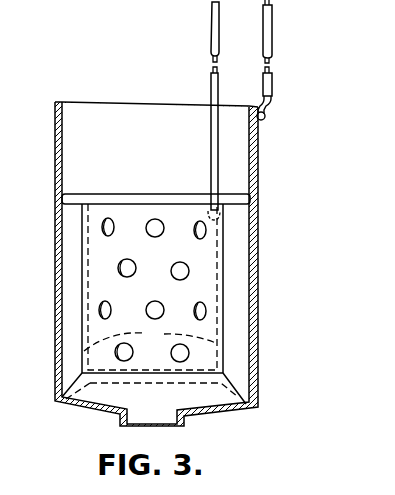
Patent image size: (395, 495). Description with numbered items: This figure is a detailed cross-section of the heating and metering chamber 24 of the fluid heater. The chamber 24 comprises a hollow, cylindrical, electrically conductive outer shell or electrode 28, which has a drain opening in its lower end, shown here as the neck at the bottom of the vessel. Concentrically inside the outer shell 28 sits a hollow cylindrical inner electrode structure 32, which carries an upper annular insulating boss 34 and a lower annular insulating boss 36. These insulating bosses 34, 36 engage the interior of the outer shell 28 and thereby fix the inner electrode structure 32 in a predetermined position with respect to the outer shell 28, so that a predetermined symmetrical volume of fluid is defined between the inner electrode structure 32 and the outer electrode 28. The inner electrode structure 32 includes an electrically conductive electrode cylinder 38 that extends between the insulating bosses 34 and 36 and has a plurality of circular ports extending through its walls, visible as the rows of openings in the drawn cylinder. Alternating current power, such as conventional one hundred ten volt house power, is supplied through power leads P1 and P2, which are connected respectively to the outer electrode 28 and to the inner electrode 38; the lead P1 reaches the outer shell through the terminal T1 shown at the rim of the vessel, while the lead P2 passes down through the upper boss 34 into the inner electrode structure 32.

The heating and metering chamber 24 is at (167, 262).
The outer shell or electrode 28 is at (56, 268).
The inner electrode structure 32 is at (79, 305).
The upper annular insulating boss 34 is at (88, 204).
The lower annular insulating boss 36 is at (74, 391).
The electrode cylinder 38 is at (150, 338).
The power lead P1 is at (273, 34).
The power lead P2 is at (210, 87).
The terminal T1 is at (264, 115).